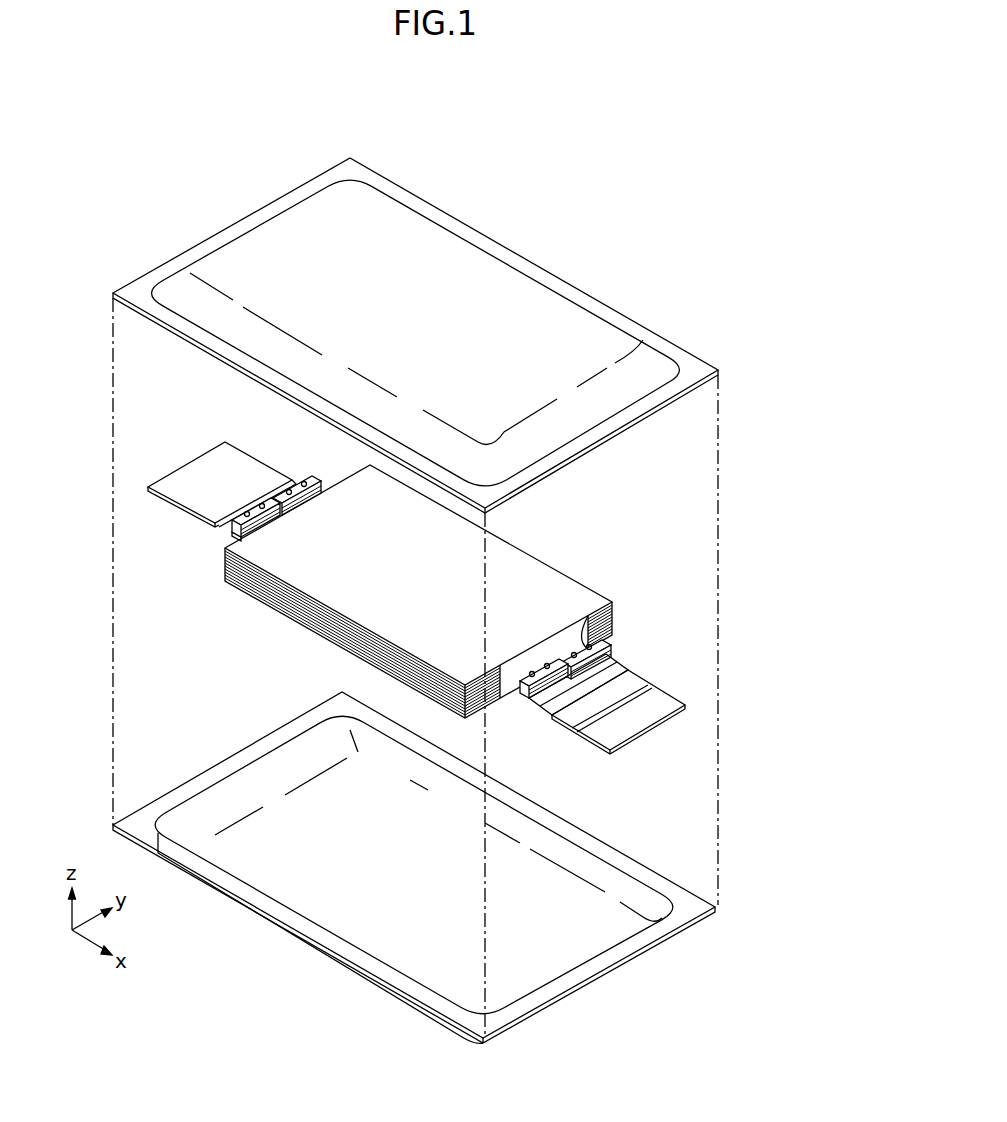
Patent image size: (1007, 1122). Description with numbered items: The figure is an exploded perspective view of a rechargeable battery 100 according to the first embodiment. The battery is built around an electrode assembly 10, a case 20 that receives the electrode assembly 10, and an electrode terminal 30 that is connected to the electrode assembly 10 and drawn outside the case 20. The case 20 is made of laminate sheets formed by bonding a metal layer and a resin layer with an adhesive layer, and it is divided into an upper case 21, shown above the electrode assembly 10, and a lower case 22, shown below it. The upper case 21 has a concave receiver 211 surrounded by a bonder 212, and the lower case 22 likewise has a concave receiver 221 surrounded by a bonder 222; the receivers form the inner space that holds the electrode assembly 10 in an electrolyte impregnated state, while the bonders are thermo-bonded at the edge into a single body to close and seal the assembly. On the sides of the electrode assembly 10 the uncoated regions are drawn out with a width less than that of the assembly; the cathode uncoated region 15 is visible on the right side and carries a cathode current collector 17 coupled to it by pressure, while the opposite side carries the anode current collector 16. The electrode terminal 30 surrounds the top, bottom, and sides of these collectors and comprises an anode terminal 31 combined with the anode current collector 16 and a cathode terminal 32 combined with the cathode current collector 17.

The rechargeable battery 100 is at (407, 108).
The electrode assembly 10 is at (563, 562).
The cathode uncoated region 15 is at (577, 637).
The anode current collector 16 is at (226, 535).
The cathode current collector 17 is at (620, 653).
The case 20 is at (614, 978).
The upper case 21 is at (207, 142).
The concave receiver 211 is at (255, 248).
The bonder 212 is at (177, 262).
The lower case 22 is at (185, 975).
The concave receiver 221 is at (287, 873).
The bonder 222 is at (312, 933).
The electrode terminal 30 is at (464, 582).
The anode terminal 31 is at (208, 440).
The cathode terminal 32 is at (685, 687).